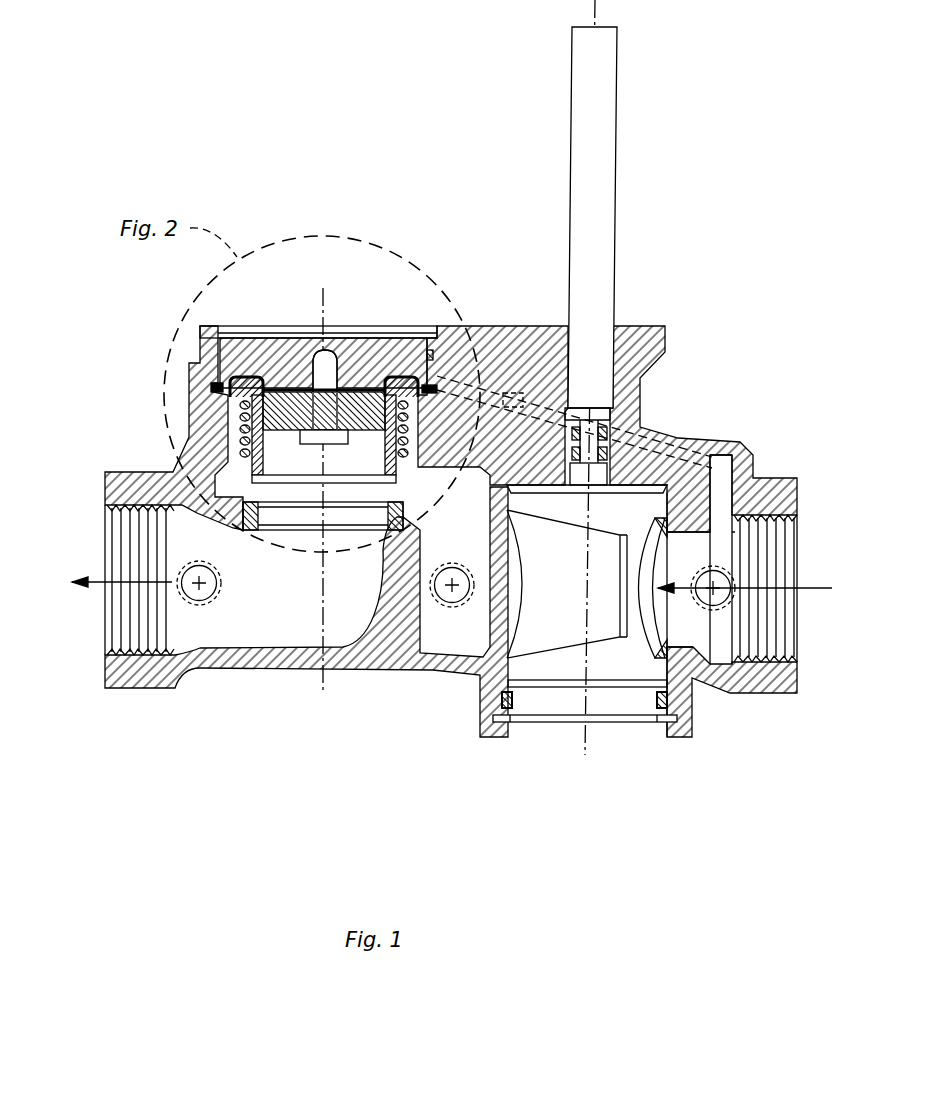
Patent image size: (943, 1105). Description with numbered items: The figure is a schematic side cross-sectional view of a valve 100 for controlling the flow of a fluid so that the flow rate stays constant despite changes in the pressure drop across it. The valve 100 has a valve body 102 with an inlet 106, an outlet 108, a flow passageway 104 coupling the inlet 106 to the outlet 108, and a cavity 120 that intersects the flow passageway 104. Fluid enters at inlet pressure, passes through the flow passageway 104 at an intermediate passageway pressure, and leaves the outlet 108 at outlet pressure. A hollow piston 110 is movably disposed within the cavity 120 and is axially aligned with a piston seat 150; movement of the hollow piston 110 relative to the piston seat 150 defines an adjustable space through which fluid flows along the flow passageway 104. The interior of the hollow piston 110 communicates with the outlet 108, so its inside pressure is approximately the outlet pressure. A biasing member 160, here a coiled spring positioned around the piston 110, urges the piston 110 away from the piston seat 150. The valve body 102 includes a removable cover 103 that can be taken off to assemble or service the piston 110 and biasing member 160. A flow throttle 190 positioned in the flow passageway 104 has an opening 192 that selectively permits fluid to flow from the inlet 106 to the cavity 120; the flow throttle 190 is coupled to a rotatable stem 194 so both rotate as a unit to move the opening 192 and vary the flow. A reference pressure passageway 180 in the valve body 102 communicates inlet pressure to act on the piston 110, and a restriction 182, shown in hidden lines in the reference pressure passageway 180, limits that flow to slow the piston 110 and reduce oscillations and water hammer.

The valve 100 is at (232, 106).
The valve body 102 is at (480, 328).
The removable cover 103 is at (382, 337).
The flow passageway 104 is at (452, 630).
The inlet 106 is at (800, 553).
The outlet 108 is at (105, 538).
The hollow piston 110 is at (213, 388).
The cavity 120 is at (243, 483).
The piston seat 150 is at (397, 518).
The biasing member 160 is at (422, 430).
The reference pressure passageway 180 is at (650, 430).
The restriction 182 is at (508, 392).
The flow throttle 190 is at (655, 445).
The opening 192 is at (553, 653).
The rotatable stem 194 is at (617, 218).